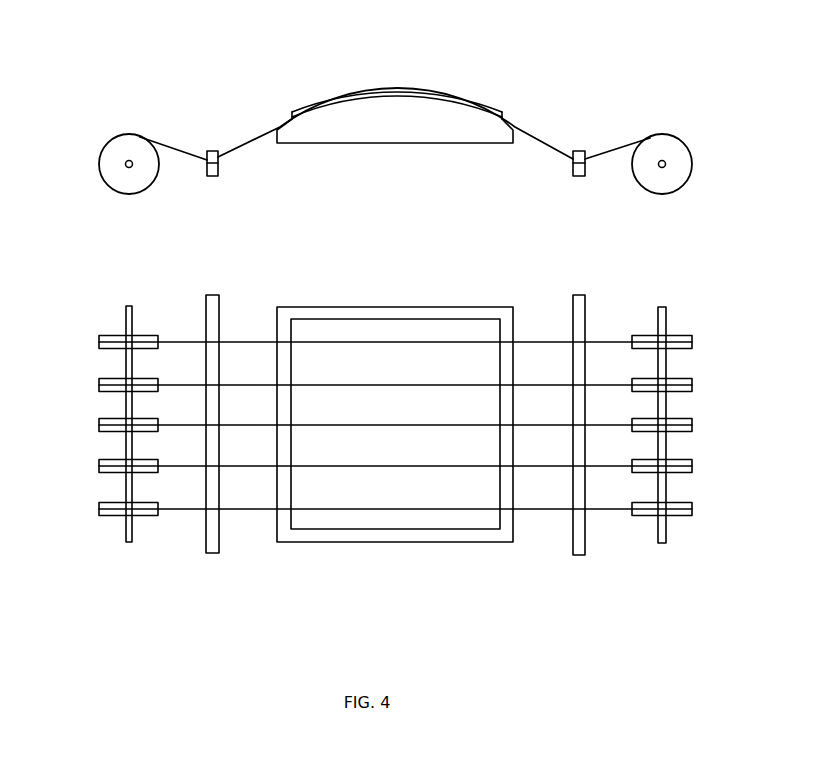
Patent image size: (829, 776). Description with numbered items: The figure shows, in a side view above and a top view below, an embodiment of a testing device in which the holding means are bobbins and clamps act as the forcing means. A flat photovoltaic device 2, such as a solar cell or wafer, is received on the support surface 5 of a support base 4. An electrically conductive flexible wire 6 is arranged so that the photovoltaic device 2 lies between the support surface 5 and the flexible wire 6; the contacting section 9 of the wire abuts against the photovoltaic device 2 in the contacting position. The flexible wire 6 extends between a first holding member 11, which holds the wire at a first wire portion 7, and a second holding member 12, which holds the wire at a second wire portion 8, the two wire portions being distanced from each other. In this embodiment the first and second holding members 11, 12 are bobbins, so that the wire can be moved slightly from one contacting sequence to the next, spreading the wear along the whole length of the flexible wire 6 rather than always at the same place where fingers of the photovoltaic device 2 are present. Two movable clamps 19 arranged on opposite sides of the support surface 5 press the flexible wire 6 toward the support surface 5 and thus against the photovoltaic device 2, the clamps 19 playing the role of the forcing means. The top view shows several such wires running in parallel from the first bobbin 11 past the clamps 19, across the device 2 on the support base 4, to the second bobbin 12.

The photovoltaic device 2 is at (418, 100).
The support base 4 is at (355, 122).
The support surface 5 is at (415, 542).
The flexible wire 6 is at (541, 342).
The first wire portion 7 is at (158, 132).
The second wire portion 8 is at (628, 115).
The contacting section 9 is at (440, 90).
The first holding member 11 is at (115, 193).
The second holding member 12 is at (668, 194).
The movable clamp 19 is at (213, 177).